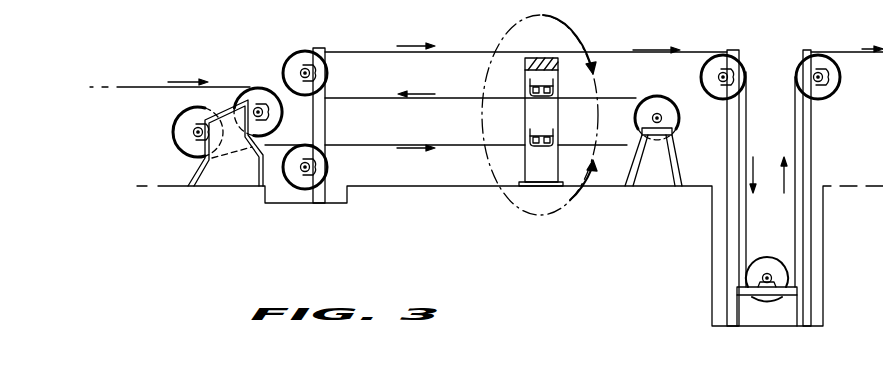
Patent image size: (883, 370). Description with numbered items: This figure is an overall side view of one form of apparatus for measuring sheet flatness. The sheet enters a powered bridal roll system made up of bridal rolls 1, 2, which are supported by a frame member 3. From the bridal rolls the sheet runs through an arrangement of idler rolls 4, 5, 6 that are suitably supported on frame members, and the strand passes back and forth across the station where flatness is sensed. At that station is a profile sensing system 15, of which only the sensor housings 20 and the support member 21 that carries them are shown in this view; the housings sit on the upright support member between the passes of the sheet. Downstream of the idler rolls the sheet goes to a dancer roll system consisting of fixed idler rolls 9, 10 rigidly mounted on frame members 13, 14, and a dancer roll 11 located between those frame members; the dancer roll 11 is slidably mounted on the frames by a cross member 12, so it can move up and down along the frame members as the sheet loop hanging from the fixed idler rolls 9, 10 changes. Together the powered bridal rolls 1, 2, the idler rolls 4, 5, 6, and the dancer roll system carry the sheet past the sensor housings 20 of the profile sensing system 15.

The bridal roll 1 is at (178, 130).
The bridal roll 2 is at (260, 96).
The frame member 3 is at (236, 176).
The idler roll 4 is at (295, 182).
The idler roll 5 is at (652, 107).
The idler roll 6 is at (297, 59).
The fixed idler roll 9 is at (715, 65).
The fixed idler roll 10 is at (827, 67).
The dancer roll 11 is at (768, 263).
The cross member 12 is at (757, 296).
The frame member 13 is at (805, 128).
The frame member 14 is at (728, 127).
The profile sensing system 15 is at (525, 115).
The sensor housing 20 is at (533, 82).
The support member 21 is at (550, 172).